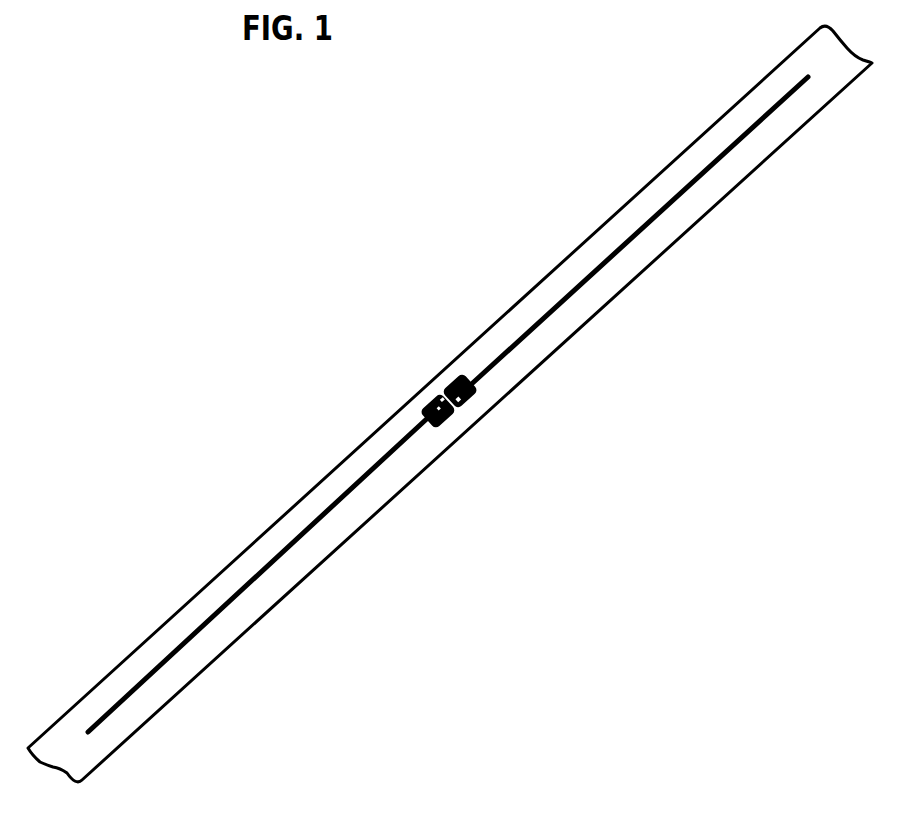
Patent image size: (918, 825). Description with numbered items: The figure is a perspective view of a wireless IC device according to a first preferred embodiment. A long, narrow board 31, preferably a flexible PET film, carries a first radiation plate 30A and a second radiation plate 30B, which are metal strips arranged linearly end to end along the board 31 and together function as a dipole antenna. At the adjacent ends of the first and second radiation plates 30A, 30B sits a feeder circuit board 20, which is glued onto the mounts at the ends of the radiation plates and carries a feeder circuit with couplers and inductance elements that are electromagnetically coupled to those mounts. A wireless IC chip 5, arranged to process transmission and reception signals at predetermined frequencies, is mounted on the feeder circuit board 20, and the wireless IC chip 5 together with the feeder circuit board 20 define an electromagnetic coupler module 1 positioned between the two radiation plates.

The electromagnetic coupler module 1 is at (440, 380).
The wireless IC chip 5 is at (458, 410).
The feeder circuit board 20 is at (450, 390).
The first radiation plate 30A is at (587, 278).
The second radiation plate 30B is at (293, 545).
The board 31 is at (623, 287).